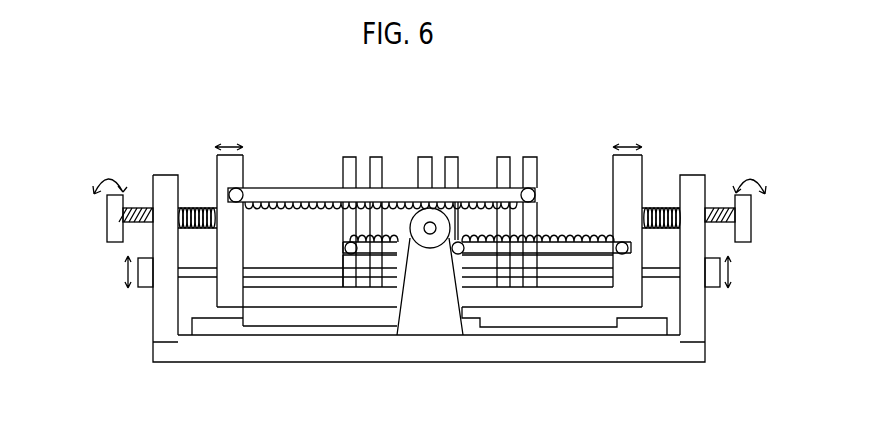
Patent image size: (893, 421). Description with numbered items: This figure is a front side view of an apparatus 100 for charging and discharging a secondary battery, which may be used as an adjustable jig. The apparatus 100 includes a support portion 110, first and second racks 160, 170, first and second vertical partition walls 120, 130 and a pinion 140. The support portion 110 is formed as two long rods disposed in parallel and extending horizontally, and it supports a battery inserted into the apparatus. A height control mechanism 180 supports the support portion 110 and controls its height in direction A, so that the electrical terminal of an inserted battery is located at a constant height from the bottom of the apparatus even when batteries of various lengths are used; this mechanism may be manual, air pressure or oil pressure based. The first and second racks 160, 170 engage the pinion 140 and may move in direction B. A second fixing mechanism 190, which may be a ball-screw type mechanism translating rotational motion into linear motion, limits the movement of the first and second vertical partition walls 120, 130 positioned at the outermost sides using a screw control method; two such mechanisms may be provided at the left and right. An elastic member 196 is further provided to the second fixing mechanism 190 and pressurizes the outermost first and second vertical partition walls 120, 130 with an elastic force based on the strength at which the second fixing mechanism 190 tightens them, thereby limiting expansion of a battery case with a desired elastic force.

The apparatus for charging and discharging 100 is at (136, 120).
The support portion 110 is at (660, 263).
The first vertical partition wall 120 is at (501, 157).
The second vertical partition wall 130 is at (531, 157).
The pinion 140 is at (448, 228).
The first rack 160 is at (553, 250).
The second rack 170 is at (403, 188).
The height control mechanism 180 is at (705, 316).
The second fixing mechanism 190 is at (107, 218).
The elastic member 196 is at (200, 208).